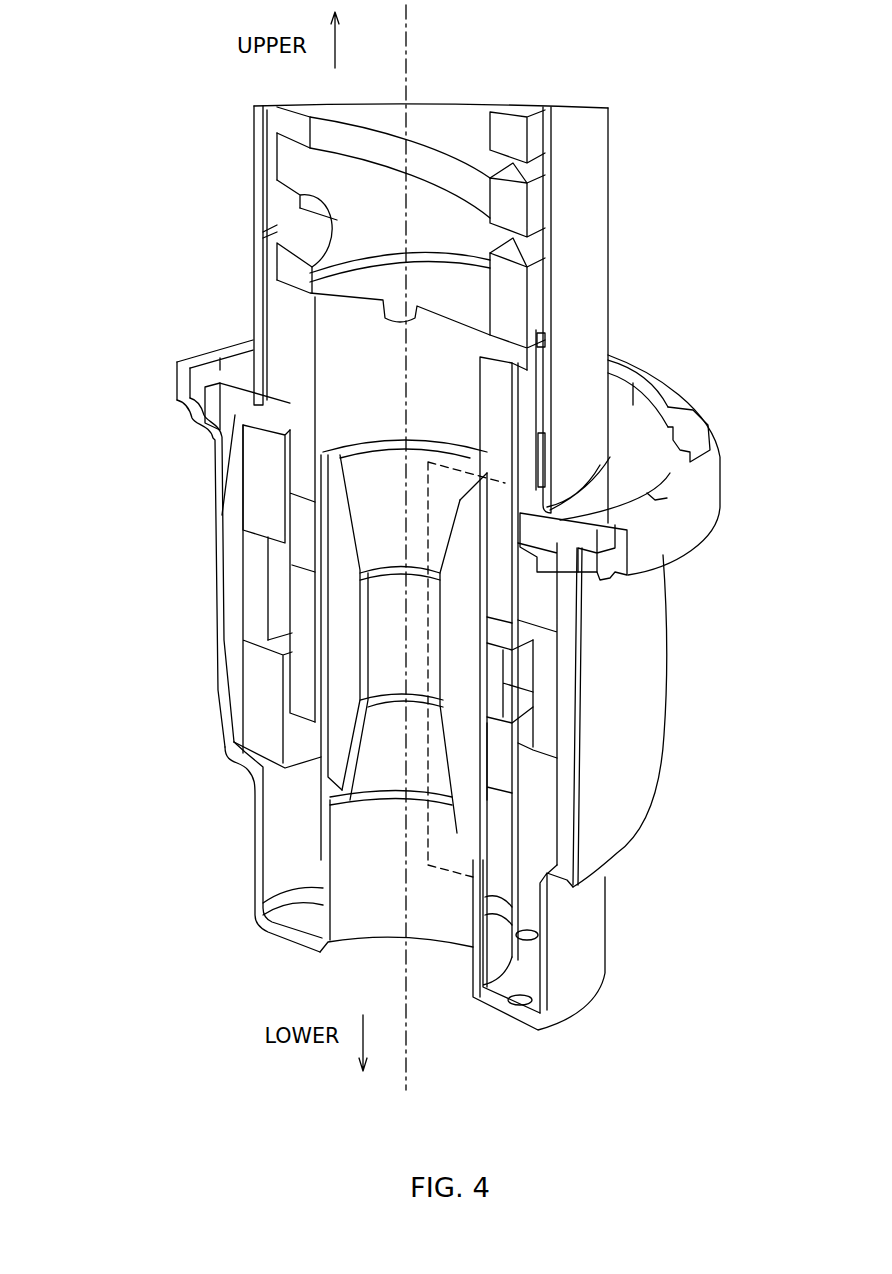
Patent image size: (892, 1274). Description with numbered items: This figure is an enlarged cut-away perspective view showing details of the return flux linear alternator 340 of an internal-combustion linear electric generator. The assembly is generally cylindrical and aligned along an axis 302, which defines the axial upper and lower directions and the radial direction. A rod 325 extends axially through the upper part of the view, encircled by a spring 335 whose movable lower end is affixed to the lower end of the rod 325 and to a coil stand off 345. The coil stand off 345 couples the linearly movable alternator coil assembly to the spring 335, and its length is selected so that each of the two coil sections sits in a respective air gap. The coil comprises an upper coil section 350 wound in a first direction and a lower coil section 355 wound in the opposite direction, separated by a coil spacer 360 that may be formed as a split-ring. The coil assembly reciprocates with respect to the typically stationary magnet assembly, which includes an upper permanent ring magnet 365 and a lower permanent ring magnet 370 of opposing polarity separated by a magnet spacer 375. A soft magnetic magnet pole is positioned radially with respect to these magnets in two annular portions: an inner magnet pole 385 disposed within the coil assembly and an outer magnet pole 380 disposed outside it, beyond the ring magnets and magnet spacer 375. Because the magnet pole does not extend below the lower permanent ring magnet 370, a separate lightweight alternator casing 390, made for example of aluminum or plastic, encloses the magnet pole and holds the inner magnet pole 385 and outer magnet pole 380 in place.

The axis 302 is at (408, 27).
The rod 325 is at (600, 200).
The spring 335 is at (523, 302).
The coil stand off 345 is at (527, 432).
The return flux linear alternator 340 is at (163, 315).
The upper coil section 350 is at (502, 615).
The lower coil section 355 is at (502, 760).
The coil spacer 360 is at (502, 683).
The upper permanent ring magnet 365 is at (548, 590).
The lower permanent ring magnet 370 is at (545, 807).
The magnet spacer 375 is at (548, 720).
The outer magnet pole 380 is at (568, 680).
The inner magnet pole 385 is at (463, 723).
The alternator casing 390 is at (613, 853).